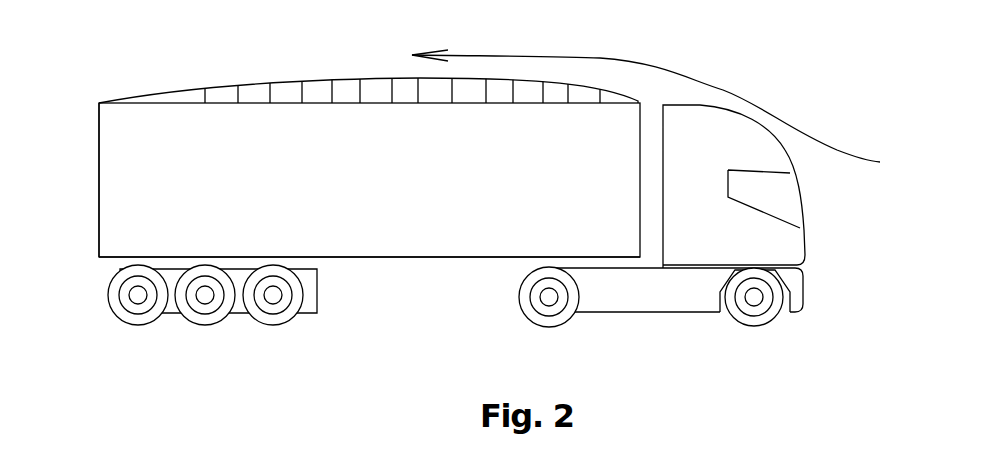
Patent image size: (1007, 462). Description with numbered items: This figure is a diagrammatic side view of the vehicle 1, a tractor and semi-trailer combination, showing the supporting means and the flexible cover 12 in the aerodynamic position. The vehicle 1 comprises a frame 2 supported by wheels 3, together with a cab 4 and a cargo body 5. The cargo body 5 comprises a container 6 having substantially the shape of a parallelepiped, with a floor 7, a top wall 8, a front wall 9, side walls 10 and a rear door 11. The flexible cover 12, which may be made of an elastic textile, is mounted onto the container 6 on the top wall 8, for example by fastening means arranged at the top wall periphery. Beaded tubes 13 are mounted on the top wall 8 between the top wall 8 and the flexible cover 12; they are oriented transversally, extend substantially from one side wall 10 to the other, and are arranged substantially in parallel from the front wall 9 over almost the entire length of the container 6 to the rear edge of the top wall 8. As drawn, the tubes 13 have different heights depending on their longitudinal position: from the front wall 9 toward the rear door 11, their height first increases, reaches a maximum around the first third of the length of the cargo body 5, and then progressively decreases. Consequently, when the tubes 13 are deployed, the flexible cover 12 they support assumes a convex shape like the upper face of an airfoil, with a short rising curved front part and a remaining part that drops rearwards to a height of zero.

The vehicle 1 is at (762, 70).
The frame 2 is at (668, 293).
The wheels 3 is at (548, 320).
The cab 4 is at (753, 243).
The cargo body 5 is at (368, 53).
The container 6 is at (367, 267).
The floor 7 is at (450, 257).
The top wall 8 is at (553, 100).
The front wall 9 is at (640, 118).
The side walls 10 is at (160, 189).
The rear door 11 is at (99, 168).
The flexible cover 12 is at (378, 78).
The beaded tubes 13 is at (332, 95).